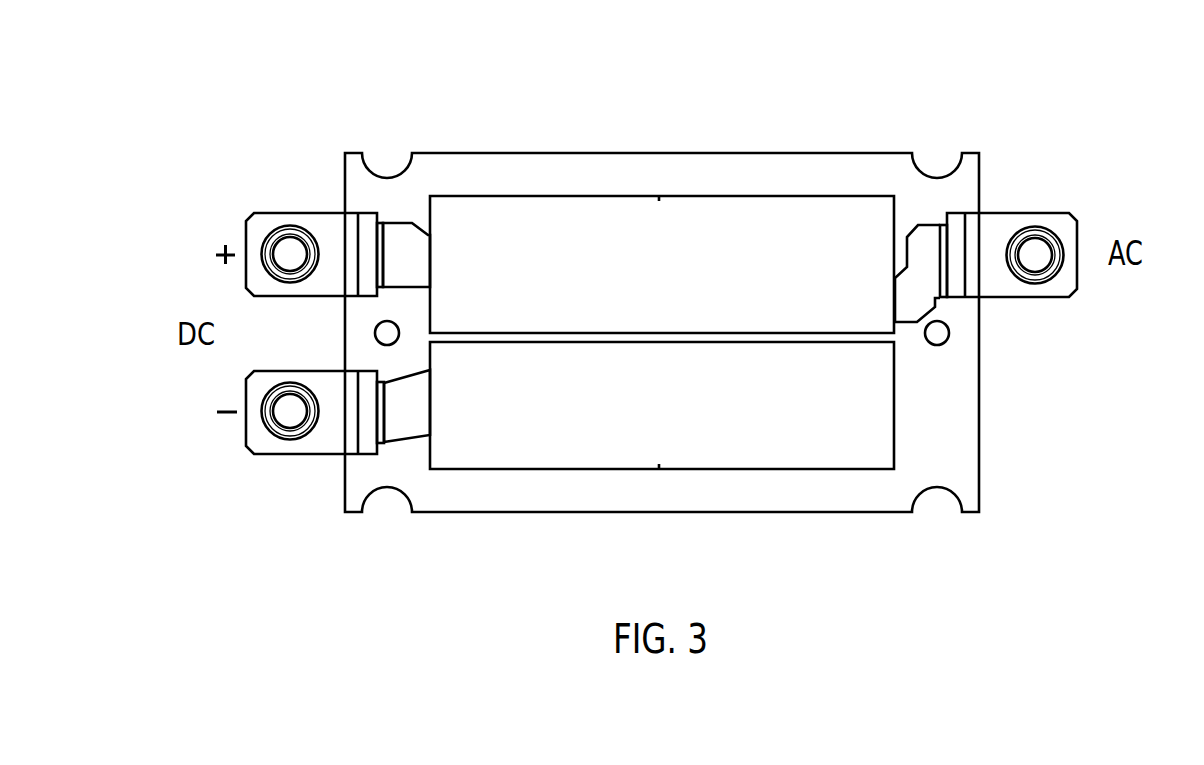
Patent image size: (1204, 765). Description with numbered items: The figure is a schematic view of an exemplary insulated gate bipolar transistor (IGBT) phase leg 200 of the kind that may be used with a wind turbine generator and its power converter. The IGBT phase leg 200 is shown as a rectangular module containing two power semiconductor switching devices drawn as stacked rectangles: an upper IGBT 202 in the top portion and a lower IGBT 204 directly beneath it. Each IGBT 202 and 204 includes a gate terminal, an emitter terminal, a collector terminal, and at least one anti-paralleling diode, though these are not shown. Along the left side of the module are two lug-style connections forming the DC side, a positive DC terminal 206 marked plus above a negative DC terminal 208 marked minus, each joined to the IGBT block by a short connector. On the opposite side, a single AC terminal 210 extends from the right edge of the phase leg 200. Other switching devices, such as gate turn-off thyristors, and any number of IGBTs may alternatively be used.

The IGBT phase leg 200 is at (468, 96).
The upper IGBT 202 is at (678, 283).
The lower IGBT 204 is at (678, 408).
The positive DC terminal 206 is at (267, 227).
The negative DC terminal 208 is at (270, 447).
The AC terminal 210 is at (1063, 228).